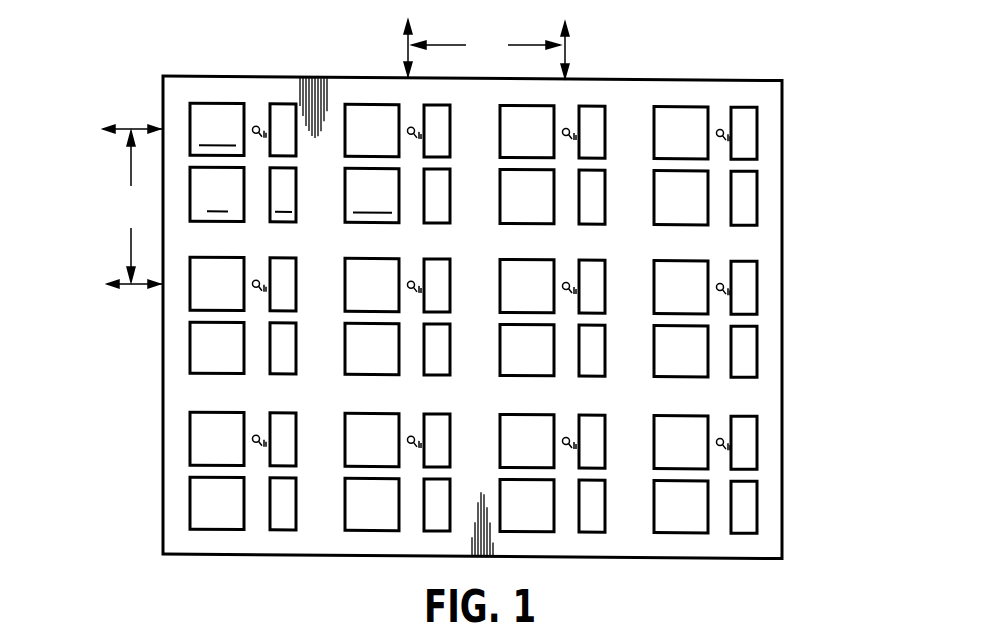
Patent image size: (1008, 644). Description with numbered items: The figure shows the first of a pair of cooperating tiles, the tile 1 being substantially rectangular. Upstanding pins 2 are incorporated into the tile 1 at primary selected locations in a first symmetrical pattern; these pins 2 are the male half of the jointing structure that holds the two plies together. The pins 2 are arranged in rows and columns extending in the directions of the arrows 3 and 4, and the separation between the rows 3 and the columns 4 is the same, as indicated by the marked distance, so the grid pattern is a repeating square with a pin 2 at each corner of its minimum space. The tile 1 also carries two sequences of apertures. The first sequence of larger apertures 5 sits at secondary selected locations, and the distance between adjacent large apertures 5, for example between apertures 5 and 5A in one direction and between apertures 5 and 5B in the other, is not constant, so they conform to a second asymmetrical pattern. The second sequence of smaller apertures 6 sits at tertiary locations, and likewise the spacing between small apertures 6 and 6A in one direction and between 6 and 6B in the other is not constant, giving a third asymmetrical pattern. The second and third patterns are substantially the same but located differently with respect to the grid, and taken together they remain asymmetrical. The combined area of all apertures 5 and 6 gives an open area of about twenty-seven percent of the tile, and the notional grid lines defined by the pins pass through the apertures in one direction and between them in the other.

The tile 1 is at (806, 194).
The upstanding pins 2 is at (253, 124).
The arrow indicating row direction 3 is at (126, 128).
The arrow indicating column direction 4 is at (408, 42).
The larger apertures 5 is at (217, 194).
The large aperture 5A is at (372, 195).
The large aperture 5B is at (217, 129).
The smaller apertures 6 is at (283, 195).
The small aperture 6A is at (281, 116).
The small aperture 6B is at (441, 193).